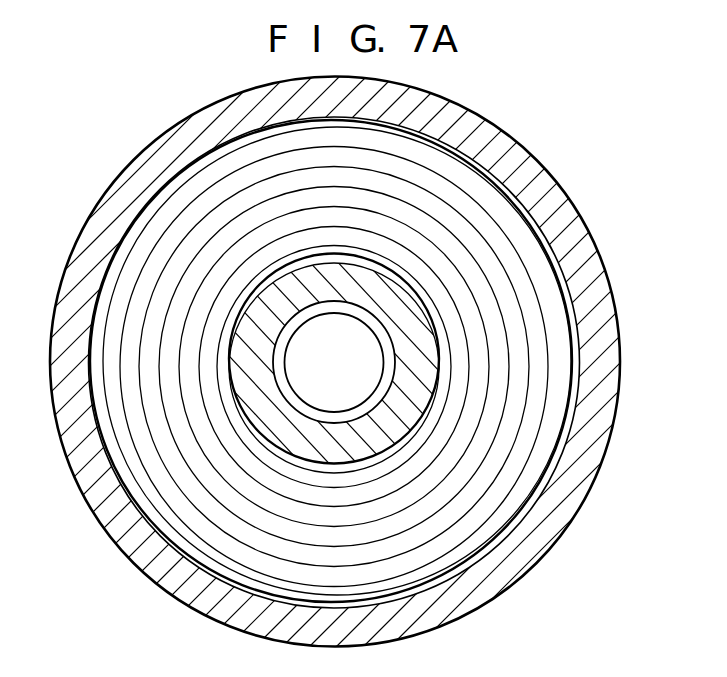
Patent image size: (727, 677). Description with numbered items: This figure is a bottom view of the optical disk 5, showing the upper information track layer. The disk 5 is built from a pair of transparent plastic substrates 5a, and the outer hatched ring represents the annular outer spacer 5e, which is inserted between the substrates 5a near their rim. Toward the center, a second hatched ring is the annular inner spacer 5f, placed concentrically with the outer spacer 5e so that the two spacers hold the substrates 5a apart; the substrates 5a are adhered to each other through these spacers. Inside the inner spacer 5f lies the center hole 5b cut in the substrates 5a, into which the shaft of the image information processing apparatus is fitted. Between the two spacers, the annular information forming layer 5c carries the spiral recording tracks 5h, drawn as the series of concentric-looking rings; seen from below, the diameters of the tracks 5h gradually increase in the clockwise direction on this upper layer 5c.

The disk 5 is at (547, 154).
The annular outer spacer 5e is at (564, 198).
The substrate 5a is at (555, 258).
The spiral recording track 5h is at (530, 342).
The center hole 5b is at (373, 372).
The information forming layer 5c is at (510, 510).
The annular inner spacer 5f is at (272, 328).